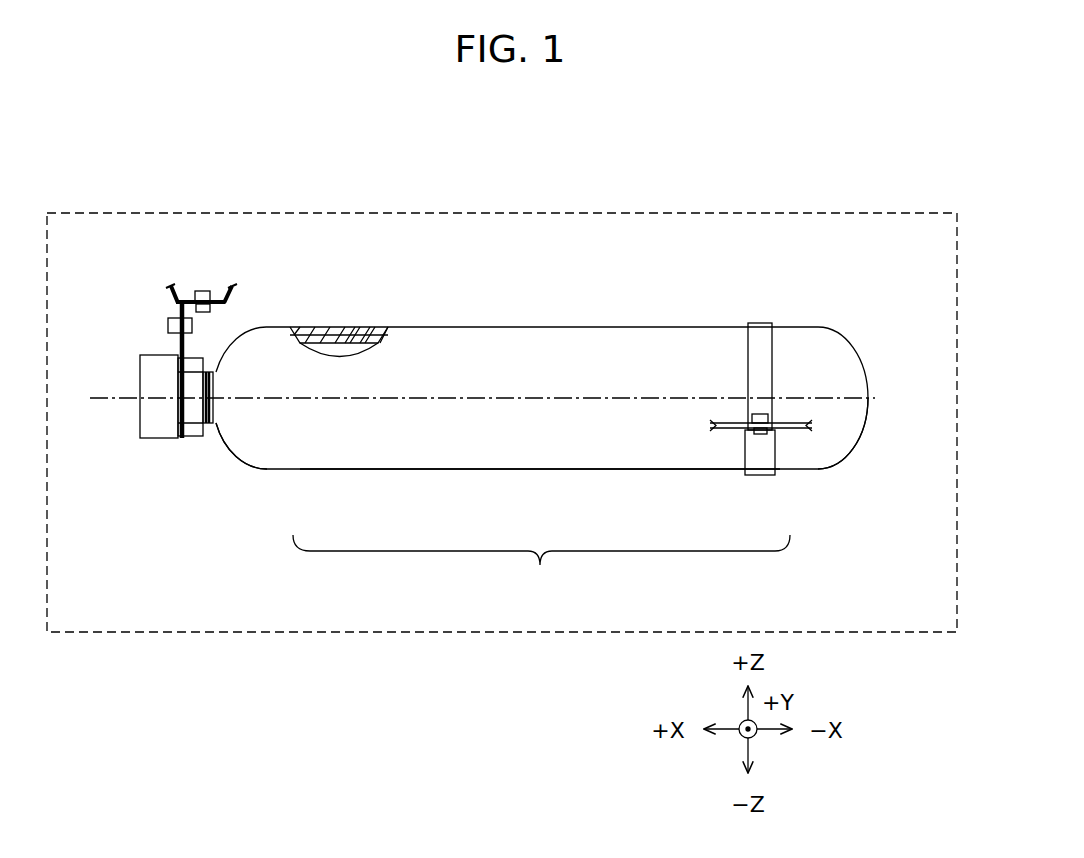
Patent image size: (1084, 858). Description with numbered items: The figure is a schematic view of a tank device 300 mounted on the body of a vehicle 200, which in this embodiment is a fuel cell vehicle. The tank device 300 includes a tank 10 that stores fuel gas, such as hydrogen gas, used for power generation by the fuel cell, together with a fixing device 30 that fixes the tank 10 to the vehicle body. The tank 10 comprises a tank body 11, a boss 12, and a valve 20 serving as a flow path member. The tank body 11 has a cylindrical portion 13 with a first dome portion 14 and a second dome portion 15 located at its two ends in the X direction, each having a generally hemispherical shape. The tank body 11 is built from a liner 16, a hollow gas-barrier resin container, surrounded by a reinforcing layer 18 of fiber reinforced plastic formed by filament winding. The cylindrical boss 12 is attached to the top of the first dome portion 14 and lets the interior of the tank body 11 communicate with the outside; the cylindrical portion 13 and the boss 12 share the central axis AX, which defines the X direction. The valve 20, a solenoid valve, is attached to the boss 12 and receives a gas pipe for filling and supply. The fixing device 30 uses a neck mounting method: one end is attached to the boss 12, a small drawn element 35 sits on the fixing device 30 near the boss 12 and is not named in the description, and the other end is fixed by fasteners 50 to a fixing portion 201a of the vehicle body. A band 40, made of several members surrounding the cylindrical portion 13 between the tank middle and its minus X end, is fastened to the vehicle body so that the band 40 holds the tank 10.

The tank 10 is at (608, 318).
The tank body 11 is at (541, 570).
The boss 12 is at (210, 425).
The cylindrical portion 13 is at (535, 470).
The first dome portion 14 is at (244, 457).
The second dome portion 15 is at (822, 453).
The liner 16 is at (370, 332).
The reinforcing layer 18 is at (330, 334).
The valve 20 is at (160, 440).
The fixing device 30 is at (162, 300).
The fixing member 35 is at (165, 326).
The band 40 is at (762, 320).
The fasteners 50 is at (222, 312).
The vehicle 200 is at (873, 213).
The fixing portion 201a is at (228, 292).
The tank device 300 is at (854, 282).
The central axis AX is at (100, 397).